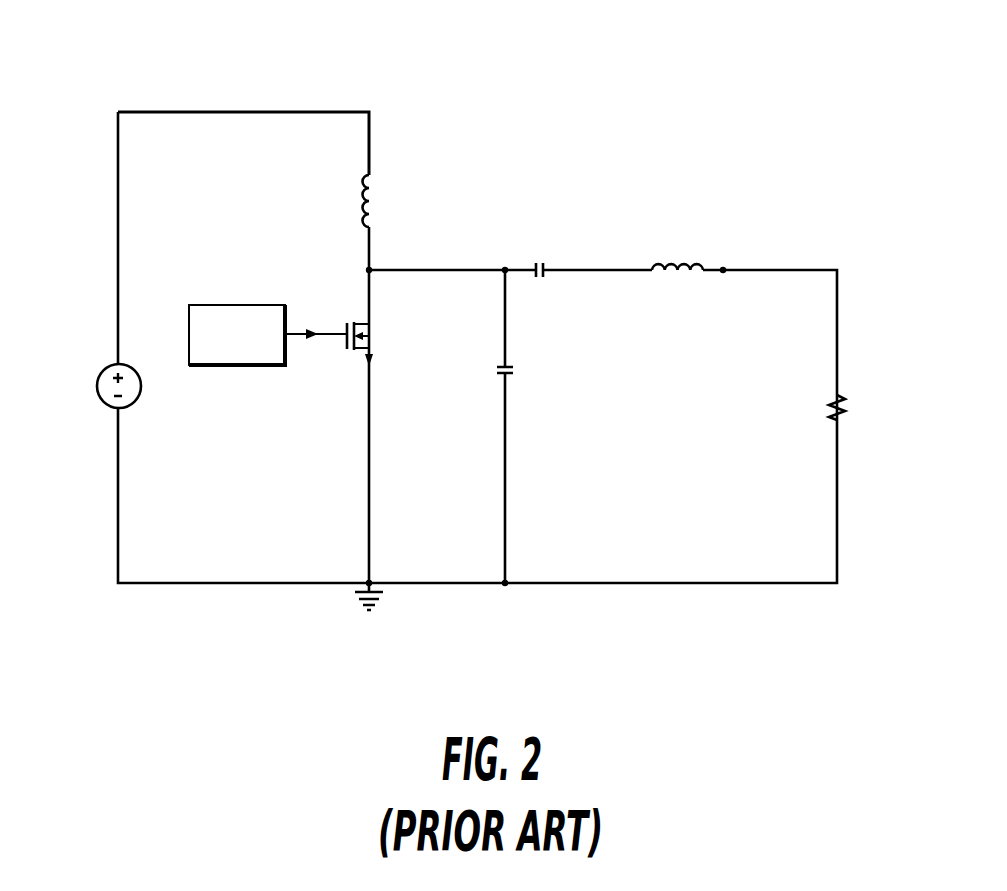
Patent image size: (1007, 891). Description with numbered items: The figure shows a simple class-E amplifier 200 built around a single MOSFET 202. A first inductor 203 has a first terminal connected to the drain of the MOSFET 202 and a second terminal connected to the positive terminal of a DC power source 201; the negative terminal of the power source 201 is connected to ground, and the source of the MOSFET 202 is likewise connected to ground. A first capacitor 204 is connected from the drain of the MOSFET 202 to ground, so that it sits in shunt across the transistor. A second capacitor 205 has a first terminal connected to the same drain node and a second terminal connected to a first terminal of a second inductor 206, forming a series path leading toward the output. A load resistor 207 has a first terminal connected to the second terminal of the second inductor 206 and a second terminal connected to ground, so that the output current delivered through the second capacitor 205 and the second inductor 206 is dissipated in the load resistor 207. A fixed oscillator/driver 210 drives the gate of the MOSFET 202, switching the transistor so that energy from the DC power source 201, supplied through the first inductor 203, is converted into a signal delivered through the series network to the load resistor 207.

The class-E amplifier 200 is at (612, 108).
The DC power source 201 is at (98, 377).
The MOSFET 202 is at (381, 335).
The inductor L1 203 is at (386, 183).
The capacitor C1 204 is at (490, 373).
The capacitor C2 205 is at (543, 281).
The inductor L2 206 is at (666, 258).
The load resistor 207 is at (830, 419).
The fixed oscillator/driver 210 is at (270, 305).